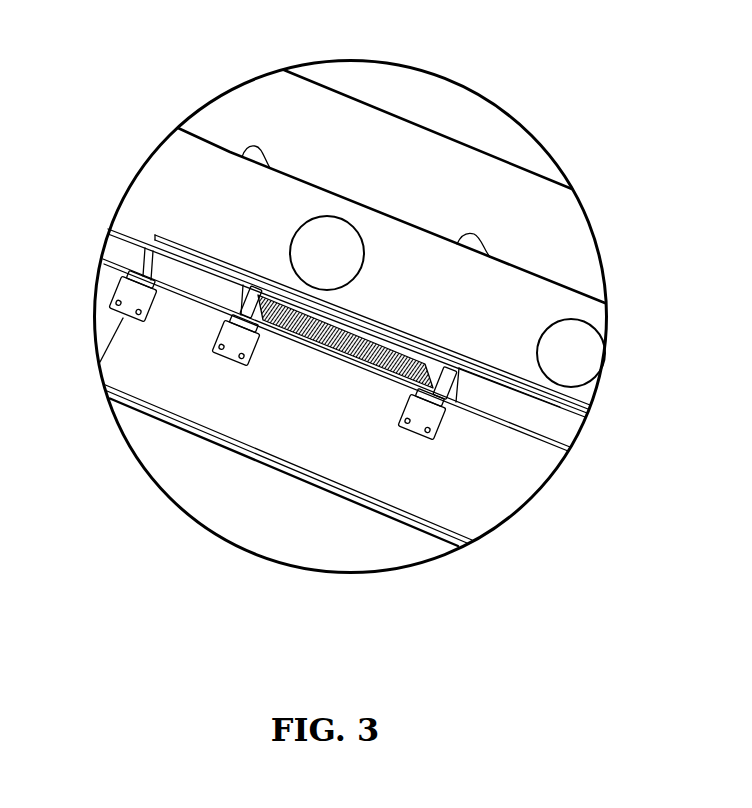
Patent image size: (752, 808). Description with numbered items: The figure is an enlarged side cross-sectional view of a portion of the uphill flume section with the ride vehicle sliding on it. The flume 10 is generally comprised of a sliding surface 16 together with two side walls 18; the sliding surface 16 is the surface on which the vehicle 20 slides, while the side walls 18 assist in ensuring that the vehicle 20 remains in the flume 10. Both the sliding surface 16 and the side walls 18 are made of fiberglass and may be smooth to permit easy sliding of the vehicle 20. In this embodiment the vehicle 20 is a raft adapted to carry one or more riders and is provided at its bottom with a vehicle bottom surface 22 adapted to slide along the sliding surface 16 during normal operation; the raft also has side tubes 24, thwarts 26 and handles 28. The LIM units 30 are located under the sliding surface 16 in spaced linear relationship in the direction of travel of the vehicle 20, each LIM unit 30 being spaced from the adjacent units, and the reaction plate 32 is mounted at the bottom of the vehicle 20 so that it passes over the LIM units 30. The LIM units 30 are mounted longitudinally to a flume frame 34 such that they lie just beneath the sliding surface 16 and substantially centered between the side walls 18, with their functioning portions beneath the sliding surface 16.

The flume 10 is at (494, 493).
The sliding surface 16 is at (540, 403).
The side walls 18 is at (487, 180).
The vehicle 20 is at (566, 281).
The vehicle bottom surface 22 is at (145, 232).
The side tubes 24 is at (512, 290).
The thwarts 26 is at (586, 345).
The handles 28 is at (250, 149).
The LIM units 30 is at (353, 352).
The reaction plate 32 is at (185, 240).
The flume frame 34 is at (230, 353).